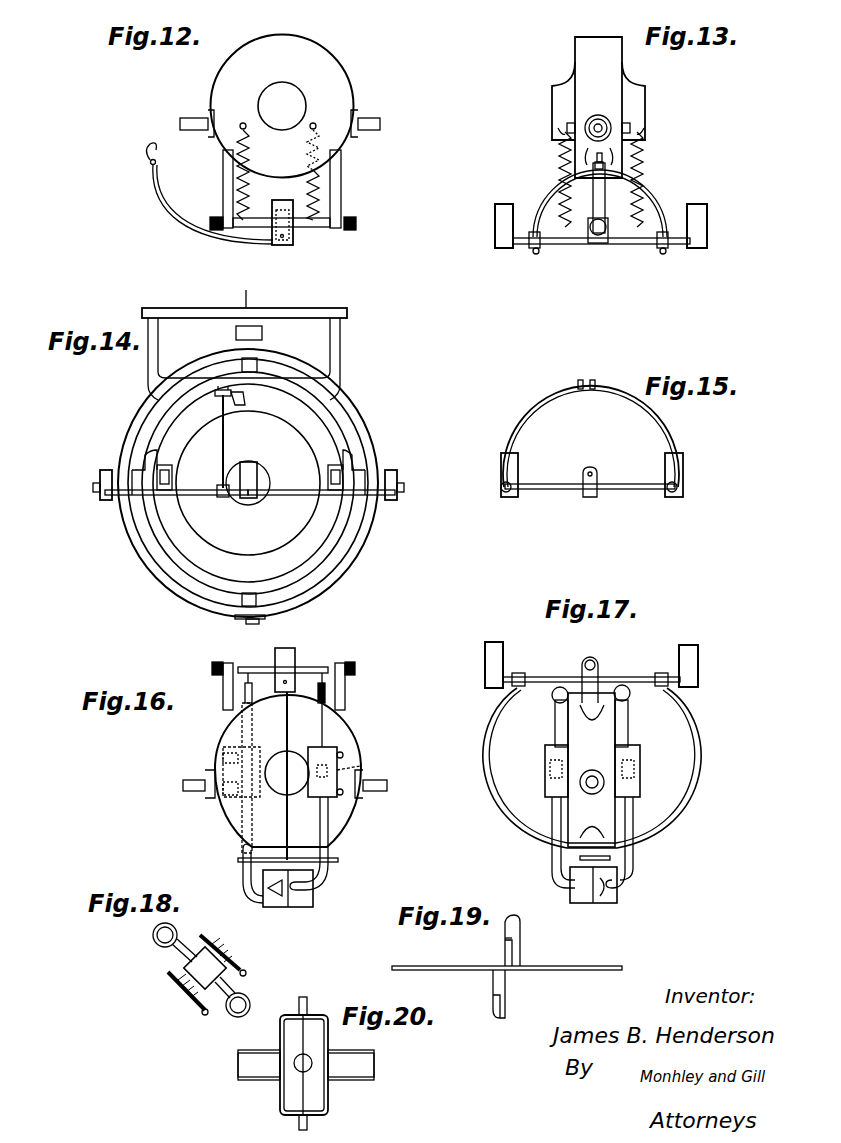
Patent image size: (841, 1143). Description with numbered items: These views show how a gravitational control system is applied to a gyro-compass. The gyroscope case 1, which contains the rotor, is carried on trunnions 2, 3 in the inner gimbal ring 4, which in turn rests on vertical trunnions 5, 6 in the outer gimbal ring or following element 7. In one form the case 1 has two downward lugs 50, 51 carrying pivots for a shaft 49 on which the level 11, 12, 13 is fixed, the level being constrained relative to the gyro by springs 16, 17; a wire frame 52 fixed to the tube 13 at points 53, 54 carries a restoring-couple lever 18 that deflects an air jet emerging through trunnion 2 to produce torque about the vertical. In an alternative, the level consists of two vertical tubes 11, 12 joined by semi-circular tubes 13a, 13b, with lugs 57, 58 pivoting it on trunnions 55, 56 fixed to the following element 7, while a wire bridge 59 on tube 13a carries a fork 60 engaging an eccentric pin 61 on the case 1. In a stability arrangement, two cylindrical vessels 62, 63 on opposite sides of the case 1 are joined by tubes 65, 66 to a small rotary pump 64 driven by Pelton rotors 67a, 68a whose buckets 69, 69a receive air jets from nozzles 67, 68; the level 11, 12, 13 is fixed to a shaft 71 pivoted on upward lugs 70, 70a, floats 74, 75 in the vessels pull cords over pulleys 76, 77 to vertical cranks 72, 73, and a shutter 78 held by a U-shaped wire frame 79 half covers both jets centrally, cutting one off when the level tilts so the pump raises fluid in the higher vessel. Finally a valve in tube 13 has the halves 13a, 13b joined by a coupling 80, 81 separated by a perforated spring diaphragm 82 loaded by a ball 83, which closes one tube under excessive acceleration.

In FIG. 12, the gyroscope case 1 is at (342, 78).
In FIG. 13, the gyroscope case 1 is at (592, 36).
In FIG. 14, the gyroscope case 1 is at (290, 433).
In FIG. 16, the gyroscope case 1 is at (356, 750).
In FIG. 17, the gyroscope case 1 is at (605, 735).
In FIG. 12, the trunnion 2 is at (192, 117).
In FIG. 13, the trunnion 2 is at (605, 125).
In FIG. 14, the trunnion 2 is at (152, 468).
In FIG. 16, the trunnion 2 is at (183, 790).
In FIG. 12, the trunnion 3 is at (380, 128).
In FIG. 14, the trunnion 3 is at (340, 470).
In FIG. 16, the trunnion 3 is at (378, 795).
In FIG. 14, the inner gimbal ring 4 is at (345, 433).
In FIG. 14, the trunnion 5 is at (260, 360).
In FIG. 14, the trunnion 6 is at (248, 602).
In FIG. 14, the outer gimbal ring 7 is at (366, 545).
In FIG. 13, the vertical tube 11 is at (503, 210).
In FIG. 14, the vertical tube 11 is at (256, 475).
In FIG. 15, the vertical tube 11 is at (683, 470).
In FIG. 17, the vertical tube 11 is at (492, 650).
In FIG. 12, the vertical tube 12 is at (283, 245).
In FIG. 13, the vertical tube 12 is at (703, 210).
In FIG. 15, the vertical tube 12 is at (500, 455).
In FIG. 16, the vertical tube 12 is at (293, 648).
In FIG. 17, the vertical tube 12 is at (697, 650).
In FIG. 13, the tube 13 is at (622, 244).
In FIG. 17, the tube 13 is at (545, 675).
In FIG. 14, the semi-circular tube 13a is at (230, 498).
In FIG. 15, the semi-circular tube 13a is at (556, 491).
In FIG. 20, the semi-circular tube 13a is at (250, 1080).
In FIG. 14, the semi-circular tube 13b is at (288, 498).
In FIG. 20, the semi-circular tube 13b is at (372, 1080).
In FIG. 12, the spring 16 is at (245, 192).
In FIG. 13, the spring 16 is at (640, 178).
In FIG. 12, the spring 17 is at (318, 190).
In FIG. 13, the spring 17 is at (560, 153).
In FIG. 12, the restoring-couple lever 18 is at (143, 151).
In FIG. 13, the restoring-couple lever 18 is at (604, 157).
In FIG. 12, the shaft 49 is at (310, 228).
In FIG. 12, the lug 50 is at (223, 179).
In FIG. 13, the lug 50 is at (593, 196).
In FIG. 12, the lug 51 is at (341, 204).
In FIG. 12, the wire frame 52 is at (165, 205).
In FIG. 13, the wire frame 52 is at (656, 200).
In FIG. 13, the fixing point 53 is at (540, 253).
In FIG. 13, the fixing point 54 is at (666, 254).
In FIG. 14, the trunnion 55 is at (93, 490).
In FIG. 14, the trunnion 56 is at (404, 490).
In FIG. 14, the lug 57 is at (108, 470).
In FIG. 15, the lug 57 is at (588, 466).
In FIG. 14, the lug 58 is at (397, 470).
In FIG. 14, the wire bridge 59 is at (226, 437).
In FIG. 15, the wire bridge 59 is at (652, 420).
In FIG. 14, the fork 60 is at (218, 394).
In FIG. 15, the fork 60 is at (588, 380).
In FIG. 14, the pin 61 is at (240, 392).
In FIG. 16, the cylindrical vessel 62 is at (330, 797).
In FIG. 17, the cylindrical vessel 62 is at (640, 790).
In FIG. 18, the cylindrical vessel 62 is at (233, 1015).
In FIG. 16, the cylindrical vessel 63 is at (223, 748).
In FIG. 17, the cylindrical vessel 63 is at (545, 785).
In FIG. 18, the cylindrical vessel 63 is at (153, 937).
In FIG. 16, the rotary pump 64 is at (300, 907).
In FIG. 17, the rotary pump 64 is at (608, 903).
In FIG. 18, the rotary pump 64 is at (210, 955).
In FIG. 16, the tube 65 is at (310, 890).
In FIG. 17, the tube 65 is at (634, 878).
In FIG. 18, the tube 65 is at (232, 990).
In FIG. 16, the tube 66 is at (243, 880).
In FIG. 17, the tube 66 is at (552, 862).
In FIG. 18, the tube 66 is at (170, 953).
In FIG. 16, the nozzle 67 is at (333, 836).
In FIG. 19, the nozzle 67 is at (505, 935).
In FIG. 18, the Pelton turbine rotor 67a is at (238, 958).
In FIG. 16, the nozzle 68 is at (240, 838).
In FIG. 17, the nozzle 68 is at (633, 845).
In FIG. 19, the nozzle 68 is at (506, 1010).
In FIG. 18, the Pelton turbine rotor 68a is at (184, 1020).
In FIG. 18, the bucket 69 is at (259, 972).
In FIG. 18, the bucket 69a is at (168, 978).
In FIG. 16, the lug 70 is at (225, 700).
In FIG. 16, the lug 70a is at (345, 690).
In FIG. 16, the shaft 71 is at (305, 668).
In FIG. 16, the vertical crank 72 is at (356, 670).
In FIG. 16, the vertical crank 73 is at (252, 680).
In FIG. 17, the vertical crank 73 is at (598, 664).
In FIG. 16, the float 74 is at (337, 770).
In FIG. 17, the float 74 is at (636, 765).
In FIG. 16, the float 75 is at (223, 770).
In FIG. 17, the float 75 is at (548, 768).
In FIG. 16, the pulley 76 is at (328, 700).
In FIG. 17, the pulley 76 is at (630, 700).
In FIG. 16, the pulley 77 is at (220, 680).
In FIG. 17, the pulley 77 is at (553, 698).
In FIG. 16, the shutter 78 is at (338, 862).
In FIG. 17, the shutter 78 is at (585, 860).
In FIG. 19, the shutter 78 is at (521, 930).
In FIG. 16, the U-shaped wire frame 79 is at (288, 840).
In FIG. 19, the U-shaped wire frame 79 is at (575, 971).
In FIG. 20, the coupling 80 is at (283, 1108).
In FIG. 20, the coupling 81 is at (322, 1112).
In FIG. 20, the spring diaphragm 82 is at (290, 1092).
In FIG. 20, the ball 83 is at (310, 1055).